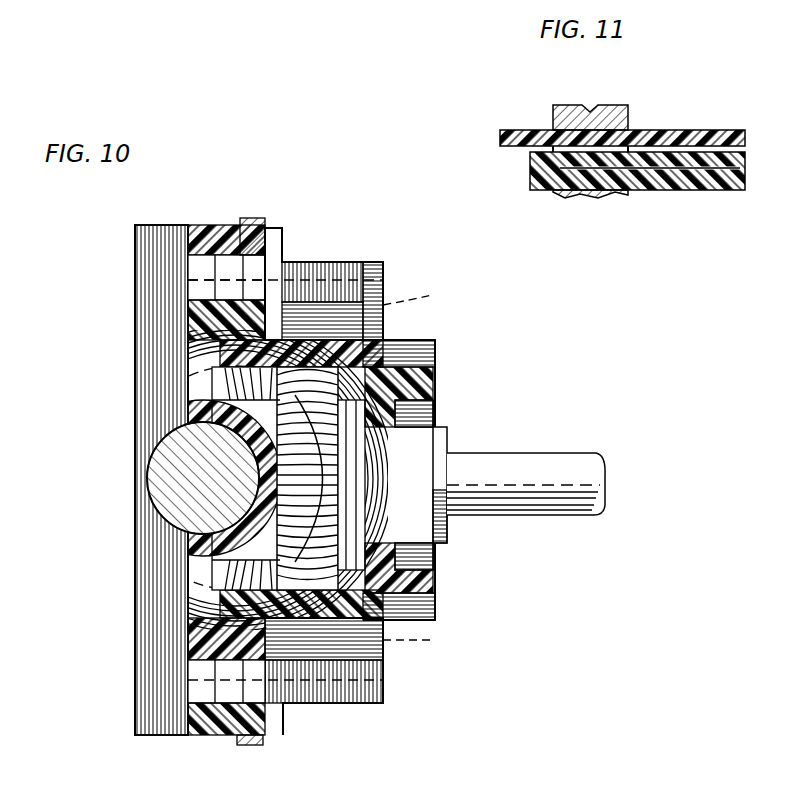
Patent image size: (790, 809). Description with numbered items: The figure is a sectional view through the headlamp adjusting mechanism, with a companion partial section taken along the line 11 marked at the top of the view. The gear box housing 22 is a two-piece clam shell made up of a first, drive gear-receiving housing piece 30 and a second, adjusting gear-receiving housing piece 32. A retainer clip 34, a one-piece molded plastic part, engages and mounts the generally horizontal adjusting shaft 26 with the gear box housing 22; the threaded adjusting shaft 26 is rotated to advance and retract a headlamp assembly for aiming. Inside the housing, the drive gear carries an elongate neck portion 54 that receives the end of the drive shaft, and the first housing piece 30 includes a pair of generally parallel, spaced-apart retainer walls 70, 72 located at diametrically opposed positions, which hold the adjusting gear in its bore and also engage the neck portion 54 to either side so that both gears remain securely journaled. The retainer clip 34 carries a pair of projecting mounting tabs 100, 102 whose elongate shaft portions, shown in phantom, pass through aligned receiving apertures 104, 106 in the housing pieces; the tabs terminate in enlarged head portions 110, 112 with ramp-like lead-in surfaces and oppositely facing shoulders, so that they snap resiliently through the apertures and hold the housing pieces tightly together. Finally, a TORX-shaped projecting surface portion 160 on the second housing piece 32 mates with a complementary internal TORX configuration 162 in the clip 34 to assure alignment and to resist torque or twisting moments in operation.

In FIG. 10, the gear box housing 22 is at (292, 256).
In FIG. 10, the adjusting shaft 26 is at (570, 465).
In FIG. 10, the first housing piece 30 is at (160, 338).
In FIG. 10, the second housing piece 32 is at (338, 262).
In FIG. 10, the retainer clip 34 is at (432, 330).
In FIG. 10, the neck portion 54 is at (180, 465).
In FIG. 10, the retainer wall 70 is at (292, 410).
In FIG. 10, the retainer wall 72 is at (322, 522).
In FIG. 10, the mounting tab 100 is at (427, 640).
In FIG. 11, the mounting tab 100 is at (700, 190).
In FIG. 10, the mounting tab 102 is at (425, 293).
In FIG. 11, the receiving aperture 104 is at (628, 195).
In FIG. 11, the receiving aperture 106 is at (560, 194).
In FIG. 10, the head portion 110 is at (190, 625).
In FIG. 11, the head portion 110 is at (545, 160).
In FIG. 10, the head portion 112 is at (185, 325).
In FIG. 10, the projecting TORX-shaped surface portion 160 is at (436, 588).
In FIG. 10, the internal TORX configuration 162 is at (430, 385).
In FIG. 10, the section line 11- 11 is at (130, 287).